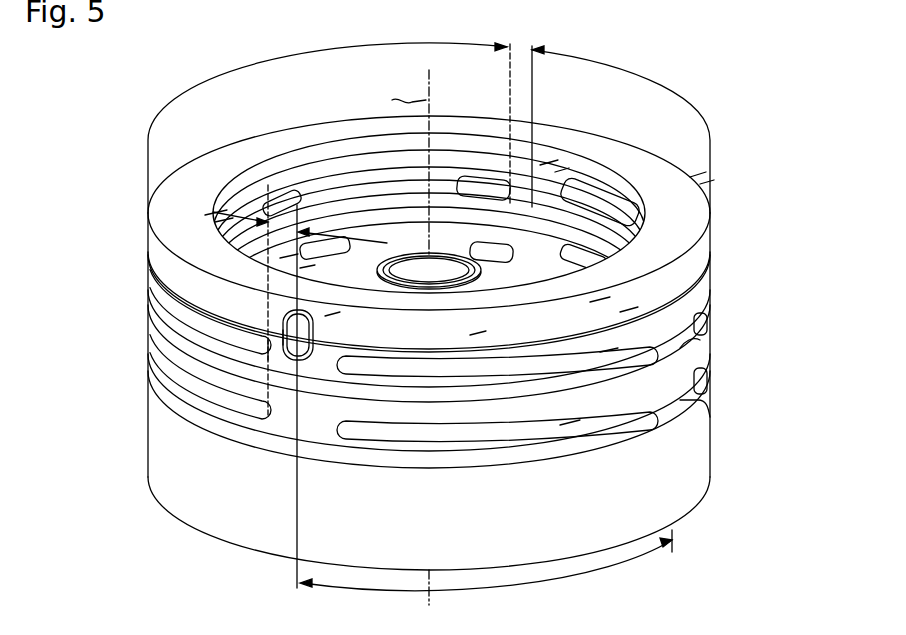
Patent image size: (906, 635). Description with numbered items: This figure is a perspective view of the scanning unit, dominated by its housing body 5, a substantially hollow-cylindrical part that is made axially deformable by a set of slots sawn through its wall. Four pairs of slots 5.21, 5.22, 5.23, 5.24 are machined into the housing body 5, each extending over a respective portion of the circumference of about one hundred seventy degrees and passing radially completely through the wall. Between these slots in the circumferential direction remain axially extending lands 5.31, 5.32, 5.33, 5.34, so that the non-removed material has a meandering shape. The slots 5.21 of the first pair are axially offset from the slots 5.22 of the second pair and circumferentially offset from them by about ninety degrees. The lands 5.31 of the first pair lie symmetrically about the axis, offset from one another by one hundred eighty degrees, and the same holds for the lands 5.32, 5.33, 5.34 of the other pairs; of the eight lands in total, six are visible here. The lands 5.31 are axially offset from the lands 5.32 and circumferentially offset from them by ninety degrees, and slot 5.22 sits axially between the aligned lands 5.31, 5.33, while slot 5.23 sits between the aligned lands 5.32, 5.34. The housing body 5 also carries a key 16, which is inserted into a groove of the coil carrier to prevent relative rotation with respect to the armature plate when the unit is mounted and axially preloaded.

The housing body 5 is at (181, 490).
The slots of the first pair of slots 5.21 is at (148, 294).
The slots of the second pair of slots 5.22 is at (148, 326).
The slots of the third pair of slots 5.23 is at (148, 360).
The slots of the fourth pair of slots 5.24 is at (148, 394).
The lands of the first pair of lands 5.31 is at (545, 200).
The lands of the second pair of lands 5.32 is at (700, 344).
The lands of the third pair of lands 5.33 is at (560, 256).
The lands of the fourth pair of lands 5.34 is at (710, 417).
The key 16 is at (316, 330).